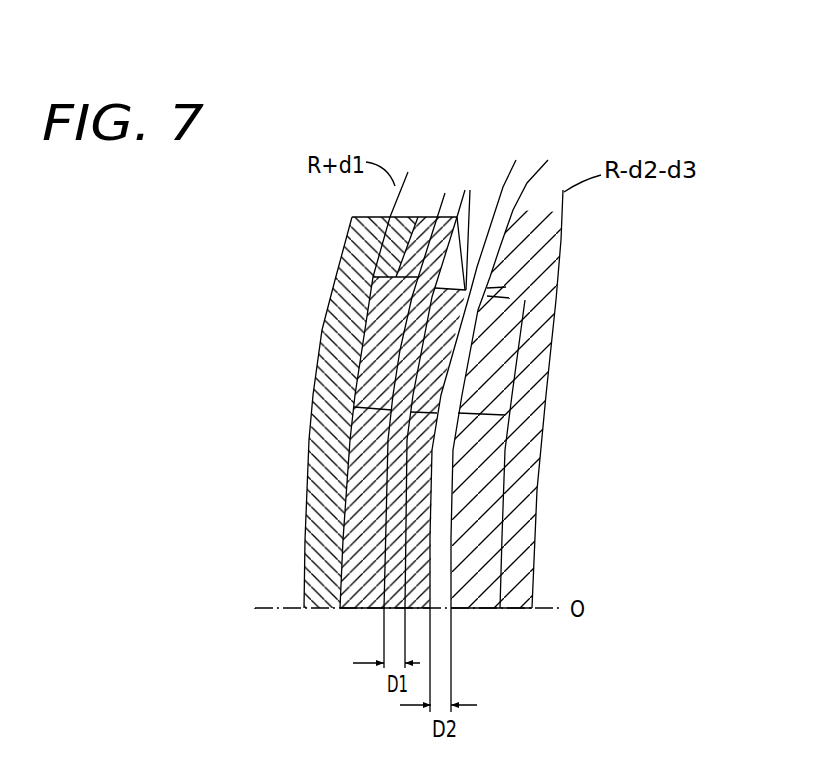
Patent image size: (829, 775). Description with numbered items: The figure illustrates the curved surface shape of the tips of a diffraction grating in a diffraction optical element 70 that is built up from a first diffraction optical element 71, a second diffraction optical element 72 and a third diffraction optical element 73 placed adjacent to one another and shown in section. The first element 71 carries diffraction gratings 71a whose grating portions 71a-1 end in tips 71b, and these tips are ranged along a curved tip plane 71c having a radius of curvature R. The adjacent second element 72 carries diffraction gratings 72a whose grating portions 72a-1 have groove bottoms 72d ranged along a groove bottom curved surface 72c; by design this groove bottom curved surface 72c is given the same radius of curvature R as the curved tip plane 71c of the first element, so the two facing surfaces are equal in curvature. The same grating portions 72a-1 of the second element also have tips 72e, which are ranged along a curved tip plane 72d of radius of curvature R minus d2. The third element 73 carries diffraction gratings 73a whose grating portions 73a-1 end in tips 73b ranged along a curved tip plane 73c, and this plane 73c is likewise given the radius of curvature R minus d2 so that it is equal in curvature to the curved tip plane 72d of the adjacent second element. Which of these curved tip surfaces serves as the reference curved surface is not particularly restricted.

The diffraction optical element 70 is at (594, 90).
The first diffraction optical element 71 is at (381, 616).
The diffraction gratings 71a is at (375, 425).
The grating portions 71a-1 is at (388, 293).
The tips 71b is at (388, 398).
The curved tip plane 71c is at (442, 193).
The second diffraction optical element 72 is at (428, 616).
The diffraction gratings 72a is at (410, 500).
The grating portions 72a-1 is at (425, 352).
The groove bottom curved surface 72c is at (466, 190).
The groove bottoms / curved tip plane 72d is at (445, 455).
The tips 72e is at (470, 273).
The third diffraction optical element 73 is at (530, 616).
The diffraction gratings 73a is at (487, 550).
The grating portions 73a-1 is at (478, 410).
The tips 73b is at (488, 294).
The curved tip plane 73c is at (548, 160).